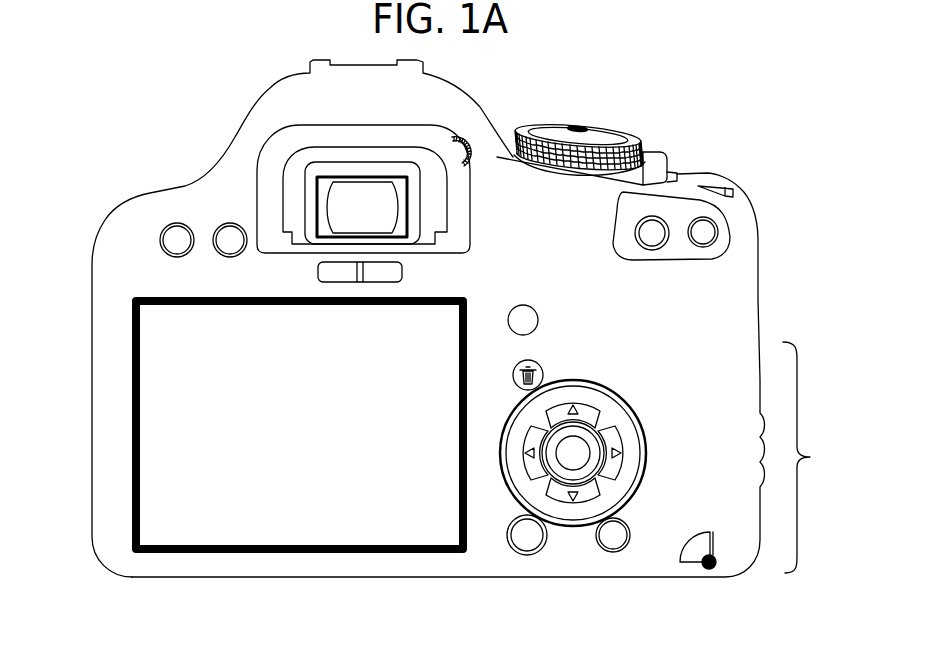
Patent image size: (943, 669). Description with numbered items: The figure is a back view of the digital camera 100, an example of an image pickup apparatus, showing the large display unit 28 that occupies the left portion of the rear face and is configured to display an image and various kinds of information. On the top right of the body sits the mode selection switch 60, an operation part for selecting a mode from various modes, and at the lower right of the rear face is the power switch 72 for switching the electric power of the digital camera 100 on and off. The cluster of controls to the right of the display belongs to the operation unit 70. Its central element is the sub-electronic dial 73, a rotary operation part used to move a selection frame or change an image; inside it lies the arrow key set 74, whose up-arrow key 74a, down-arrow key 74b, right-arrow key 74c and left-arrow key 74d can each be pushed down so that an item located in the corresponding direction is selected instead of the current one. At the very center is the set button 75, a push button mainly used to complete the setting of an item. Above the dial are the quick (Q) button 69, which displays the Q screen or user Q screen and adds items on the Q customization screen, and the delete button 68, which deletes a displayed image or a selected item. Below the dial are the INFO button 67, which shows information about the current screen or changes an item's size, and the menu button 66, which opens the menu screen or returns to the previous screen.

The digital camera 100 is at (651, 84).
The display unit 28 is at (287, 503).
The mode selection switch 60 is at (568, 127).
The menu button 66 is at (611, 553).
The INFO button 67 is at (523, 553).
The delete button 68 is at (537, 357).
The quick (Q) button 69 is at (537, 305).
The operation unit 70 is at (811, 457).
The power switch 72 is at (714, 547).
The sub-electronic dial 73 is at (603, 405).
The arrow key set 74 is at (587, 457).
The up-arrow key 74a is at (560, 412).
The down-arrow key 74b is at (575, 502).
The right-arrow key 74c is at (610, 443).
The left-arrow key 74d is at (530, 470).
The set button 75 is at (579, 461).